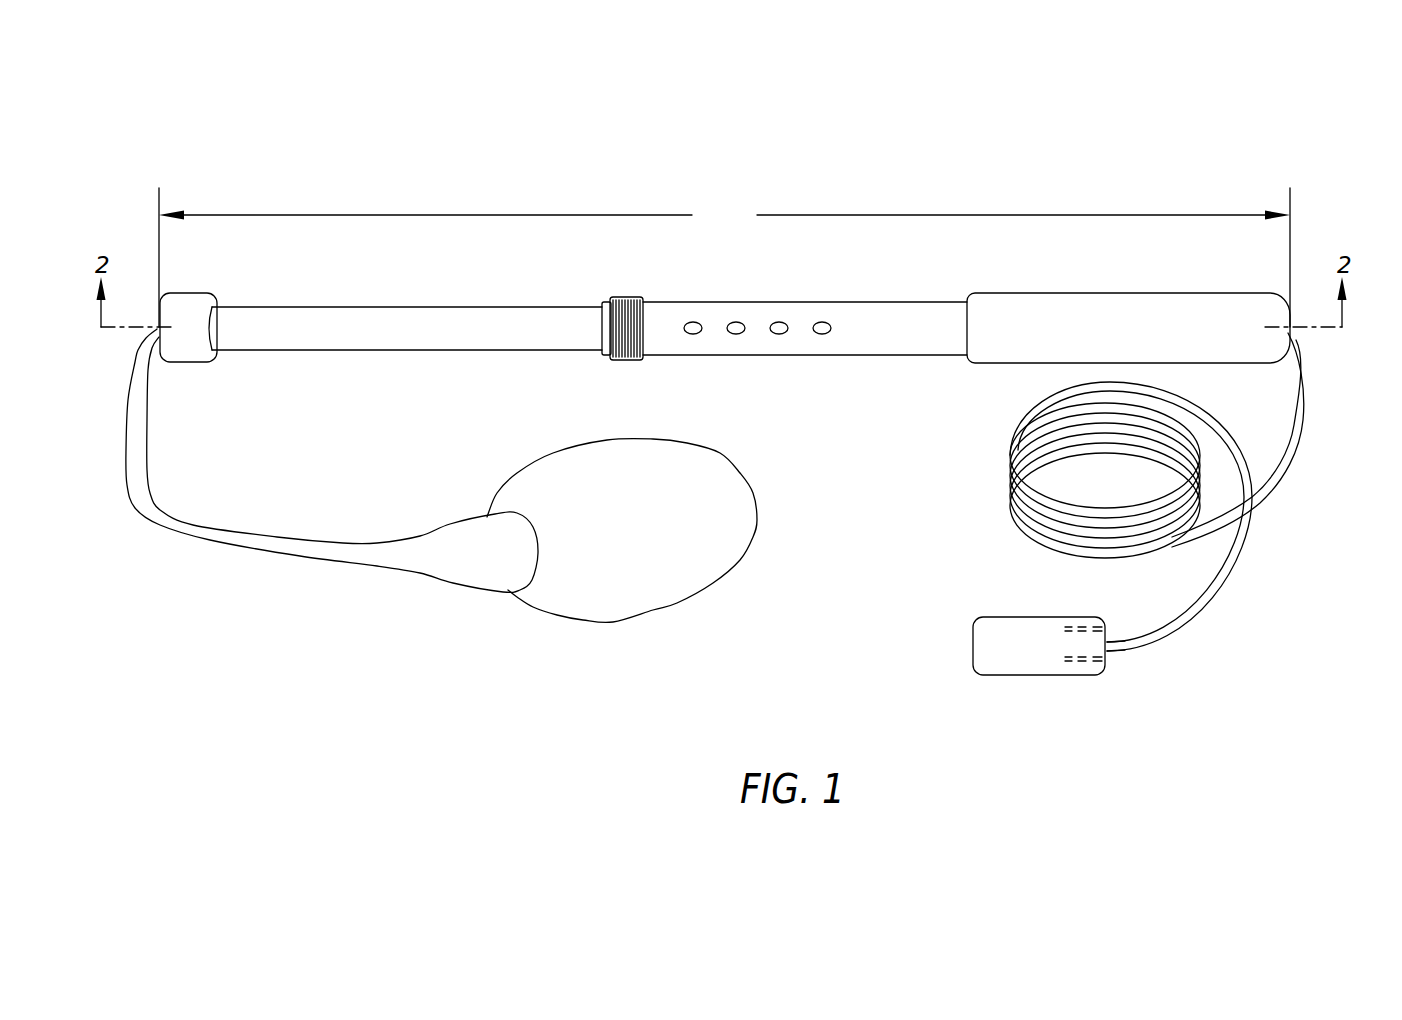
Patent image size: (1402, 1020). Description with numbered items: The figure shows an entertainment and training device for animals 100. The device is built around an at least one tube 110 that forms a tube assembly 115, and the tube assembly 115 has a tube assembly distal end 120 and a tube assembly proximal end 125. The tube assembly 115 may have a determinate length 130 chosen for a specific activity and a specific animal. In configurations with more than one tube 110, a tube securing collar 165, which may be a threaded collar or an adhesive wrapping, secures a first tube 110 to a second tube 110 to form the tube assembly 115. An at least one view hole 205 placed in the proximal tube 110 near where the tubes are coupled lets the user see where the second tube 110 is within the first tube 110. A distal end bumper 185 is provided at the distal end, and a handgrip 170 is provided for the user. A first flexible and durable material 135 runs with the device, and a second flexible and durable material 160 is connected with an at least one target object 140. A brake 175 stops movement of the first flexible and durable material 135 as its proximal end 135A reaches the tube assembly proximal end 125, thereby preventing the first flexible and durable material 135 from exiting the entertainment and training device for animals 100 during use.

The entertainment and training device for animals 100 is at (215, 125).
The tube 110 is at (936, 339).
The tube assembly 115 is at (594, 305).
The tube assembly distal end 120 is at (159, 318).
The tube assembly proximal end 125 is at (1290, 333).
The determinate length 130 is at (724, 257).
The first flexible and durable material 135 is at (1015, 465).
The proximal end of the first flexible and durable material 135A is at (1132, 647).
The target object 140 is at (657, 539).
The second flexible and durable material 160 is at (508, 569).
The tube securing collar 165 is at (602, 328).
The handgrip 170 is at (1143, 341).
The brake 175 is at (1040, 657).
The distal end bumper 185 is at (193, 317).
The view hole 205 is at (737, 322).